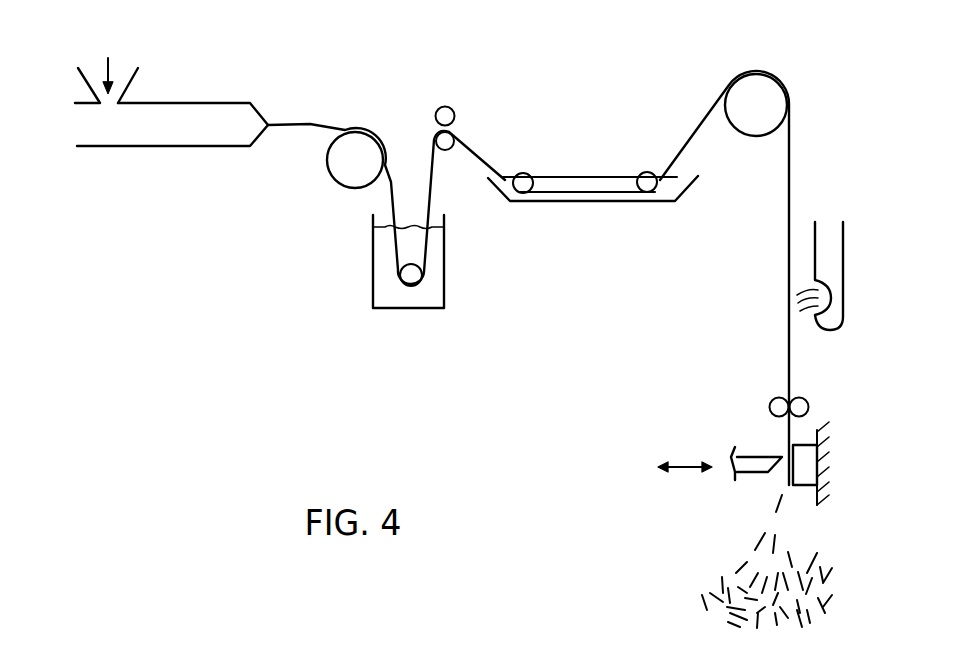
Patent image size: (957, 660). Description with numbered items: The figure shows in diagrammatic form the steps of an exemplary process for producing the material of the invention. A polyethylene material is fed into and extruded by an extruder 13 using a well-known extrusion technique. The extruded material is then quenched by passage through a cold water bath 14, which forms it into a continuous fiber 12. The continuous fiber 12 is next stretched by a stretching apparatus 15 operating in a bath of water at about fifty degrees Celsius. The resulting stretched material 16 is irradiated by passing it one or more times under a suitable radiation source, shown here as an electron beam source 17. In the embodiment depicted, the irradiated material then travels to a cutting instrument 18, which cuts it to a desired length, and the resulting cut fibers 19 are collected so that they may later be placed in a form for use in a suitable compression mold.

The continuous fiber 12 is at (432, 192).
The extruder 13 is at (158, 95).
The cold water bath 14 is at (360, 270).
The stretching apparatus 15 is at (593, 210).
The stretched material 16 is at (675, 155).
The electron beam source 17 is at (843, 295).
The cutting instrument 18 is at (822, 462).
The cut fibers 19 is at (817, 560).